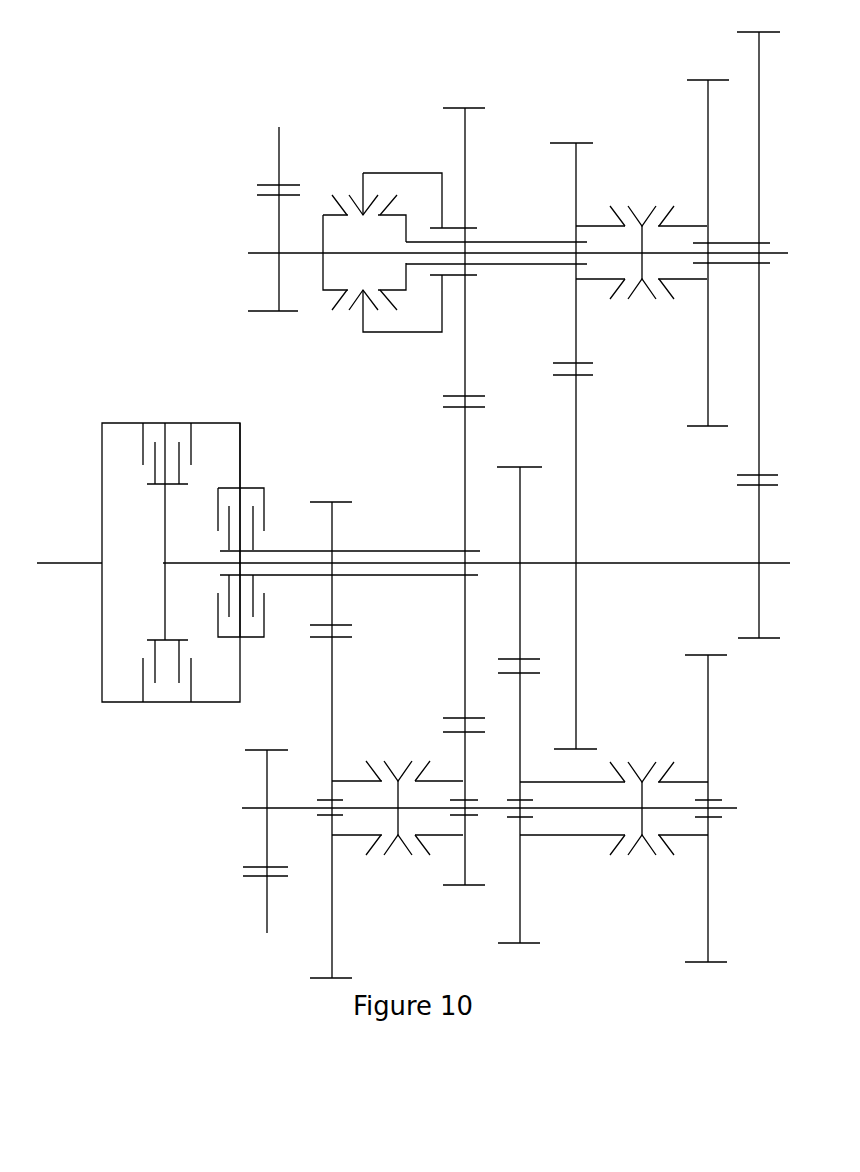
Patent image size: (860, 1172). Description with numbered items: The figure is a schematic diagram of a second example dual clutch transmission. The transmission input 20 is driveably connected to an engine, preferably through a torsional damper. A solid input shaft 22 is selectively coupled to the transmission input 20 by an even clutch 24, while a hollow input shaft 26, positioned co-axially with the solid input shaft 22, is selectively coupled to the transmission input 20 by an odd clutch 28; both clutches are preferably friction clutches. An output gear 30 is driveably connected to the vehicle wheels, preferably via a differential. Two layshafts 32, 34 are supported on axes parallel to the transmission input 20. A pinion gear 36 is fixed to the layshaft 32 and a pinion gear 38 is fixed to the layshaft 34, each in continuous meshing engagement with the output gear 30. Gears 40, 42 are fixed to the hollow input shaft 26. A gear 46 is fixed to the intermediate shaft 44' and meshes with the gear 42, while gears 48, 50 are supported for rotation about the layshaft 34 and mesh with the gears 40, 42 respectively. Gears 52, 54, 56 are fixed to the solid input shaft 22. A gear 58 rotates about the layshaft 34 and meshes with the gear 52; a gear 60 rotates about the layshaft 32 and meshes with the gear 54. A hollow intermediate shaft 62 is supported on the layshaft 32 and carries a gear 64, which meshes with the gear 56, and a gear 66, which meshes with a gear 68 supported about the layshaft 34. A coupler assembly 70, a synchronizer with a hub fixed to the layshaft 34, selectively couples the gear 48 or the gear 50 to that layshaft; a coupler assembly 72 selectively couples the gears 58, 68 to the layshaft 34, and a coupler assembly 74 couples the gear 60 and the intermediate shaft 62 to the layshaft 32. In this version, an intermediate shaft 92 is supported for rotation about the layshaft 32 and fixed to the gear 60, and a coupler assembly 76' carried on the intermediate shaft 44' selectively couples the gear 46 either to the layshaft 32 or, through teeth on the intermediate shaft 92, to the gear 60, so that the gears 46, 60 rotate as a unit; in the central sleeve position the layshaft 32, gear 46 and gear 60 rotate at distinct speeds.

The transmission input 20 is at (70, 563).
The solid input shaft 22 is at (622, 565).
The even clutch 24 is at (142, 453).
The hollow input shaft 26 is at (410, 551).
The odd clutch 28 is at (265, 519).
The output gear 30 is at (280, 173).
The layshaft 32 is at (304, 253).
The layshaft 34 is at (305, 808).
The pinion gear 36 is at (278, 276).
The pinion gear 38 is at (265, 840).
The gear 40 is at (330, 532).
The gear 42 is at (465, 650).
The intermediate shaft 44' is at (496, 191).
The gear 46 is at (465, 343).
The gear 48 is at (332, 890).
The gear 50 is at (465, 865).
The gear 52 is at (522, 503).
The gear 54 is at (575, 397).
The gear 56 is at (758, 535).
The gear 58 is at (520, 873).
The gear 60 is at (576, 170).
The hollow intermediate shaft 62 is at (738, 241).
The gear 64 is at (758, 61).
The gear 66 is at (708, 345).
The gear 68 is at (707, 898).
The coupler assembly 70 is at (387, 772).
The coupler assembly 72 is at (632, 767).
The coupler assembly 74 is at (630, 212).
The coupler assembly 76' is at (384, 229).
The intermediate shaft 92 is at (540, 268).